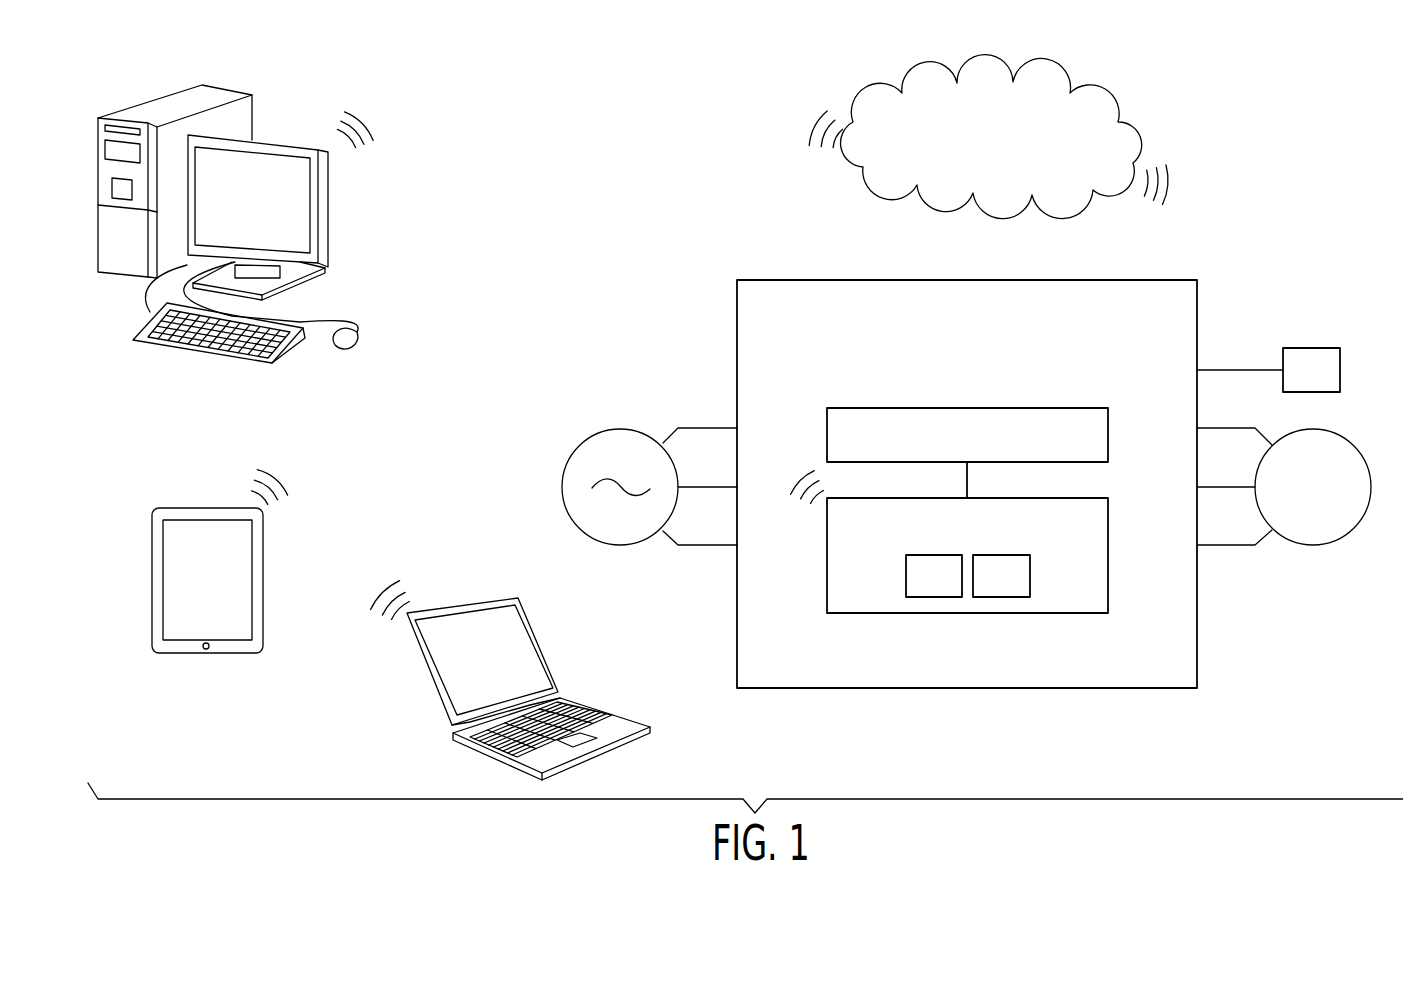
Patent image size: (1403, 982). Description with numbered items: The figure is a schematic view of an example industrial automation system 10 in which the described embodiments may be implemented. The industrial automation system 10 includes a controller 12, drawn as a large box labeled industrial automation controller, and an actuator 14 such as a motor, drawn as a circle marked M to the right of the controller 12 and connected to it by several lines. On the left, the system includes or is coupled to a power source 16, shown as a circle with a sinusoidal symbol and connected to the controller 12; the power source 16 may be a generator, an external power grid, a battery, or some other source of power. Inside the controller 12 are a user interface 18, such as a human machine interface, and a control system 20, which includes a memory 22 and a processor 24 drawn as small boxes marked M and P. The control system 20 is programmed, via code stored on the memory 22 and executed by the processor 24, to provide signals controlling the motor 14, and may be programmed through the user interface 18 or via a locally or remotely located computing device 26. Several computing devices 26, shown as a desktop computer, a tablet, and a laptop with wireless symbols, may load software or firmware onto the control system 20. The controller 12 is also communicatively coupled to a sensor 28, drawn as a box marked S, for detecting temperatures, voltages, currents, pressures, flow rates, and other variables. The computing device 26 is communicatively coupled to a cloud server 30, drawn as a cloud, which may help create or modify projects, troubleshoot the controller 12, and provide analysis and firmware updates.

The industrial automation system 10 is at (658, 294).
The controller 12 is at (967, 280).
The actuator 14 is at (1313, 430).
The power source 16 is at (620, 430).
The user interface 18 is at (1108, 435).
The control system 20 is at (1108, 555).
The memory 22 is at (906, 575).
The processor 24 is at (1030, 575).
The computing device 26 is at (328, 207).
The sensor 28 is at (1312, 348).
The cloud server 30 is at (1103, 92).